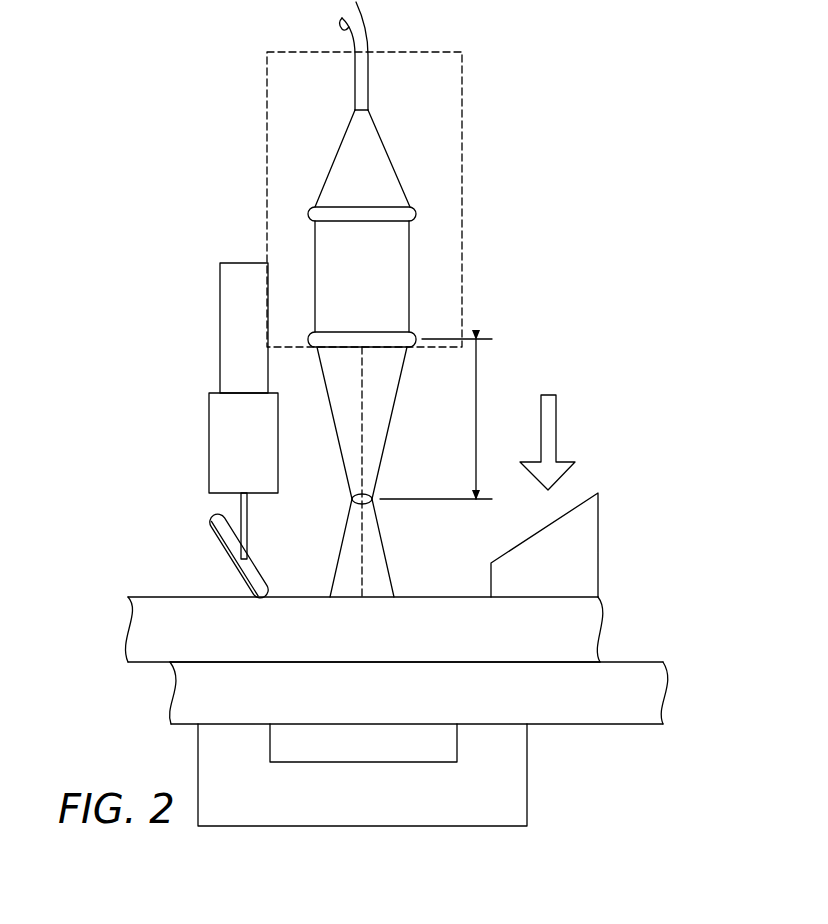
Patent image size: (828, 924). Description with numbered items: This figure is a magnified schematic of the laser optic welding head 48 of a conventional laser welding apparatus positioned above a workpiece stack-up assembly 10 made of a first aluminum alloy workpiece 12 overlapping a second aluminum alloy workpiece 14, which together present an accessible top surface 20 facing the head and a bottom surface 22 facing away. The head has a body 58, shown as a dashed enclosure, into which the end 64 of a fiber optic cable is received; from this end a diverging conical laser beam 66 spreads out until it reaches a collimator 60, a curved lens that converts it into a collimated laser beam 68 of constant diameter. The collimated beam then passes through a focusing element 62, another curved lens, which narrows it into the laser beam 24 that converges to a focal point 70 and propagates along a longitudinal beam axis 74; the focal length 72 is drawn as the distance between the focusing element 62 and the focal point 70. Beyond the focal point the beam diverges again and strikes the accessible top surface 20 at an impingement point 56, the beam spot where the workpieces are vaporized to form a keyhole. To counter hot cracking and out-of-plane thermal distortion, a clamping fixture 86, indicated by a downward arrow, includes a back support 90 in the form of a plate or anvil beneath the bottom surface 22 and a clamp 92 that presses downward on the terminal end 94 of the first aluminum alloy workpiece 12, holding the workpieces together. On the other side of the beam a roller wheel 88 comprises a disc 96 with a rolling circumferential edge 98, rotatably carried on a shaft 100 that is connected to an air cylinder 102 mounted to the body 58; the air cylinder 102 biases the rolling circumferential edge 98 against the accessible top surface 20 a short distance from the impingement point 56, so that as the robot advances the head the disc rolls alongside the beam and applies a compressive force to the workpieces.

The workpiece stack-up assembly 10 is at (124, 636).
The first aluminum alloy workpiece 12 is at (148, 618).
The second aluminum alloy workpiece 14 is at (192, 692).
The accessible top surface 20 is at (429, 596).
The bottom surface 22 is at (364, 735).
The laser beam 24 is at (399, 386).
The laser optic welding head 48 is at (236, 106).
The impingement point 56 is at (385, 587).
The body 58 is at (462, 70).
The collimator 60 is at (398, 213).
The focusing element 62 is at (398, 340).
The end of fiber optic cable 64 is at (369, 70).
The diverging conical laser beam 66 is at (353, 137).
The collimated laser beam 68 is at (393, 262).
The focal point 70 is at (372, 497).
The focal length 72 is at (477, 388).
The longitudinal beam axis 74 is at (362, 421).
The clamping fixture 86 is at (612, 516).
The roller wheel 88 is at (194, 489).
The back support 90 is at (505, 766).
The clamp 92 is at (580, 550).
The terminal end 94 is at (578, 624).
The disc 96 is at (265, 583).
The rolling circumferential edge 98 is at (212, 520).
The shaft 100 is at (248, 517).
The air cylinder 102 is at (218, 424).